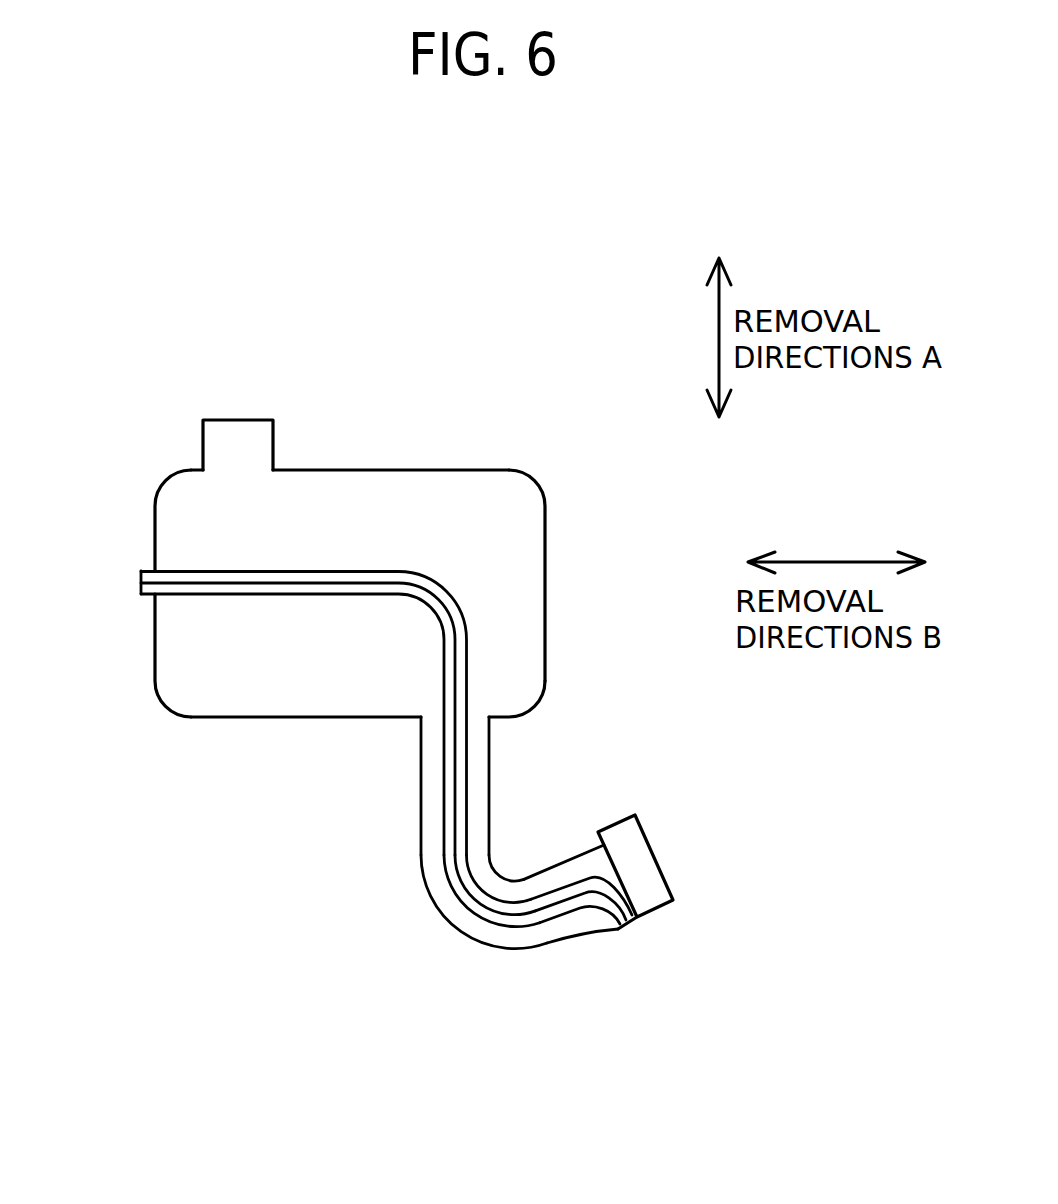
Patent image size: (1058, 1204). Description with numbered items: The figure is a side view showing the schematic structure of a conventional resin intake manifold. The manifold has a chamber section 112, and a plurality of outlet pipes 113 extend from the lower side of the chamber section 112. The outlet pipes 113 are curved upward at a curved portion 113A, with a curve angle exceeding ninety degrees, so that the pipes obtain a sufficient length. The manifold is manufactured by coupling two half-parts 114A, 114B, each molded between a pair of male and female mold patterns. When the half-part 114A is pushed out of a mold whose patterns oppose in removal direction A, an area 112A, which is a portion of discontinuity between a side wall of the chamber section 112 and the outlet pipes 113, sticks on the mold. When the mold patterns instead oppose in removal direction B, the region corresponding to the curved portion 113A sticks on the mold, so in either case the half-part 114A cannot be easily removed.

The chamber section 112 is at (160, 490).
The area 112A is at (538, 727).
The outlet pipes 113 is at (407, 850).
The curved portion 113A is at (451, 1050).
The half-part 114A is at (402, 471).
The half-part 114B is at (252, 717).